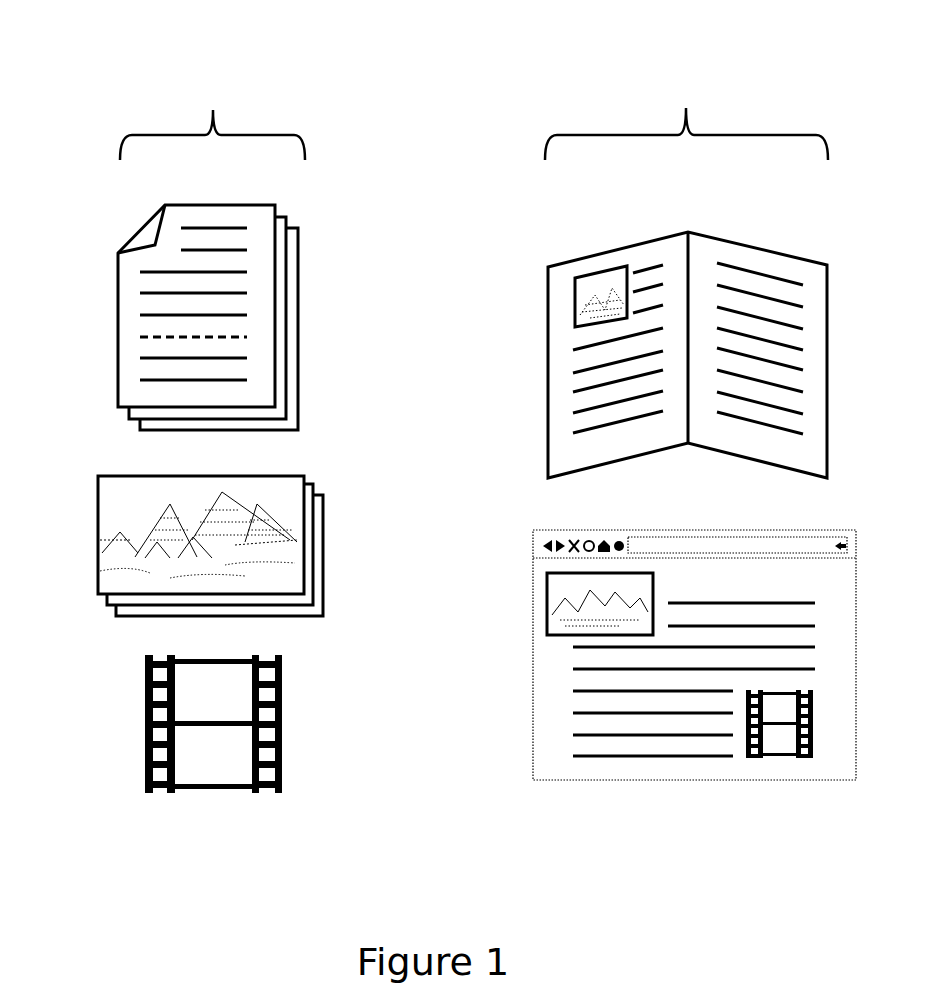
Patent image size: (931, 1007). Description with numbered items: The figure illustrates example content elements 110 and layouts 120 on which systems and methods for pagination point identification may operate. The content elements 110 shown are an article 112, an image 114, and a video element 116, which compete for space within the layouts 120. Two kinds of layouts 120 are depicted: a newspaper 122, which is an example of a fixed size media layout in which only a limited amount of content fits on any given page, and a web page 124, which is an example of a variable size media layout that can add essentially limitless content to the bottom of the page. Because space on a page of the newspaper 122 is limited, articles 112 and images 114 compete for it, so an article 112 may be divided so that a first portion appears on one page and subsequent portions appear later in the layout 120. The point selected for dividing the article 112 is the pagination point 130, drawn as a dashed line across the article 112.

The content elements 110 is at (170, 397).
The article 112 is at (117, 310).
The image 114 is at (98, 535).
The video element 116 is at (145, 725).
The layouts 120 is at (652, 401).
The newspaper 122 is at (548, 373).
The web page 124 is at (533, 655).
The pagination point 130 is at (245, 337).